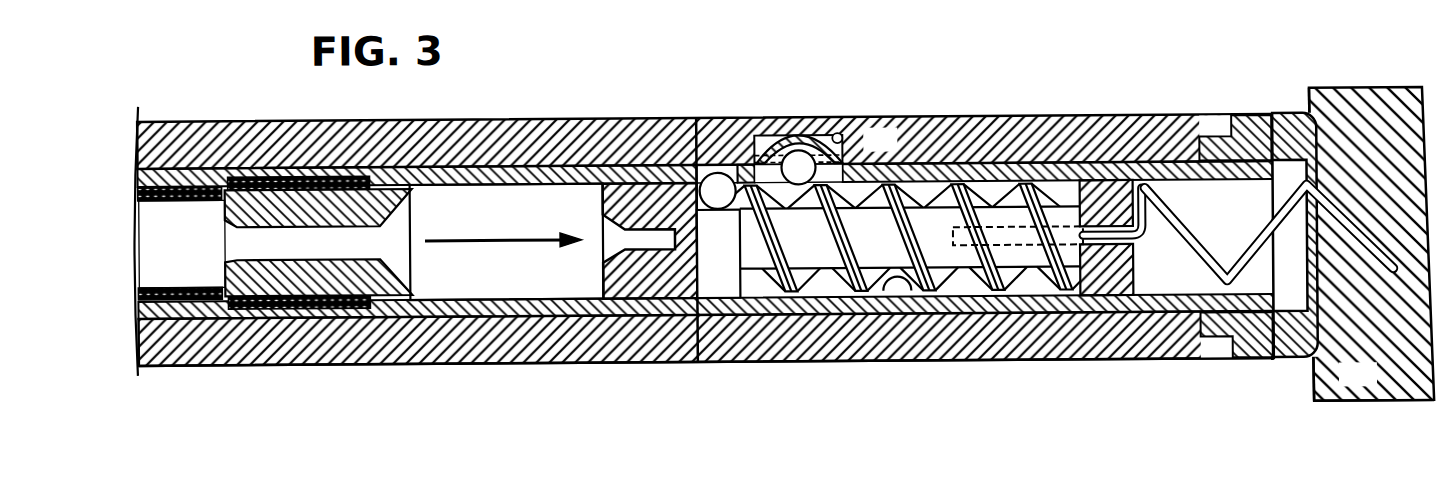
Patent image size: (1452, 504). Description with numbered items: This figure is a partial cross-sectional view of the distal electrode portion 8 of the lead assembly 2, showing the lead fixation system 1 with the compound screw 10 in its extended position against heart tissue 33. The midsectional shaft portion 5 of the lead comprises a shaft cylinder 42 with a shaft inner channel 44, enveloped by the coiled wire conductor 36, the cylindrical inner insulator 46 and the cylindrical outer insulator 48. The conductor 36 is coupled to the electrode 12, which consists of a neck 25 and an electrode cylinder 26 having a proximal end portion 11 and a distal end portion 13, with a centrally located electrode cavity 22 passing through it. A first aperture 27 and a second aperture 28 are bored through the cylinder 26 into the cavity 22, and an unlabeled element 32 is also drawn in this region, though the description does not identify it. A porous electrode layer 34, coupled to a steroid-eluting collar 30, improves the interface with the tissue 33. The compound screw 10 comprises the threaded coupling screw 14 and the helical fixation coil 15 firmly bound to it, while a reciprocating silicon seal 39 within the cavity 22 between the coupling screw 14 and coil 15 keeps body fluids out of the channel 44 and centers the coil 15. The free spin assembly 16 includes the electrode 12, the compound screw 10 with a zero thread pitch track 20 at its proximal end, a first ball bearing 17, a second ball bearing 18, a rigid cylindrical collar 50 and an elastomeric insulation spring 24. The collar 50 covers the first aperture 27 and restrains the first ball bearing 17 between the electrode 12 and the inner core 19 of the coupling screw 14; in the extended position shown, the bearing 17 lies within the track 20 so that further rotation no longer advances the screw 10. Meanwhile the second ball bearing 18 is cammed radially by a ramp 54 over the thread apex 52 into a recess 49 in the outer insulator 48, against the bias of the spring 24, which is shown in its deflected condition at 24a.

The lead fixation system 1 is at (574, 80).
The lead assembly 2 is at (283, 370).
The midsectional shaft portion 5 is at (341, 370).
The distal electrode portion 8 is at (1328, 134).
The compound screw 10 is at (837, 287).
The proximal end portion 11 is at (537, 169).
The electrode 12 is at (1325, 327).
The distal end portion 13 is at (1170, 176).
The threaded coupling screw 14 is at (768, 292).
The helical fixation coil 15 is at (1207, 252).
The free spin assembly 16 is at (762, 96).
The first ball bearing 17 is at (687, 163).
The second ball bearing 18 is at (880, 140).
The inner core 19 is at (998, 207).
The zero thread pitch track 20 is at (717, 227).
The electrode cavity 22 is at (905, 297).
The elastomeric insulation spring 24 is at (810, 284).
The deflected elastomeric spring 24a is at (800, 133).
The neck 25 is at (284, 197).
The electrode cylinder 26 is at (1078, 293).
The first aperture 27 is at (712, 192).
The second aperture 28 is at (790, 152).
The steroid-eluting collar 30 is at (1253, 352).
The orifice plug 32 is at (653, 244).
The heart tissue 33 is at (1380, 105).
The porous electrode layer 34 is at (1290, 127).
The coiled wire conductor 36 is at (247, 170).
The reciprocating silicon seal 39 is at (1118, 188).
The shaft cylinder 42 is at (168, 372).
The shaft inner channel 44 is at (197, 269).
The cylindrical inner insulator 46 is at (192, 180).
The cylindrical outer insulator 48 is at (165, 118).
The recess 49 is at (858, 135).
The rigid cylindrical collar 50 is at (733, 163).
The thread apex 52 is at (968, 187).
The ramp 54 is at (935, 199).